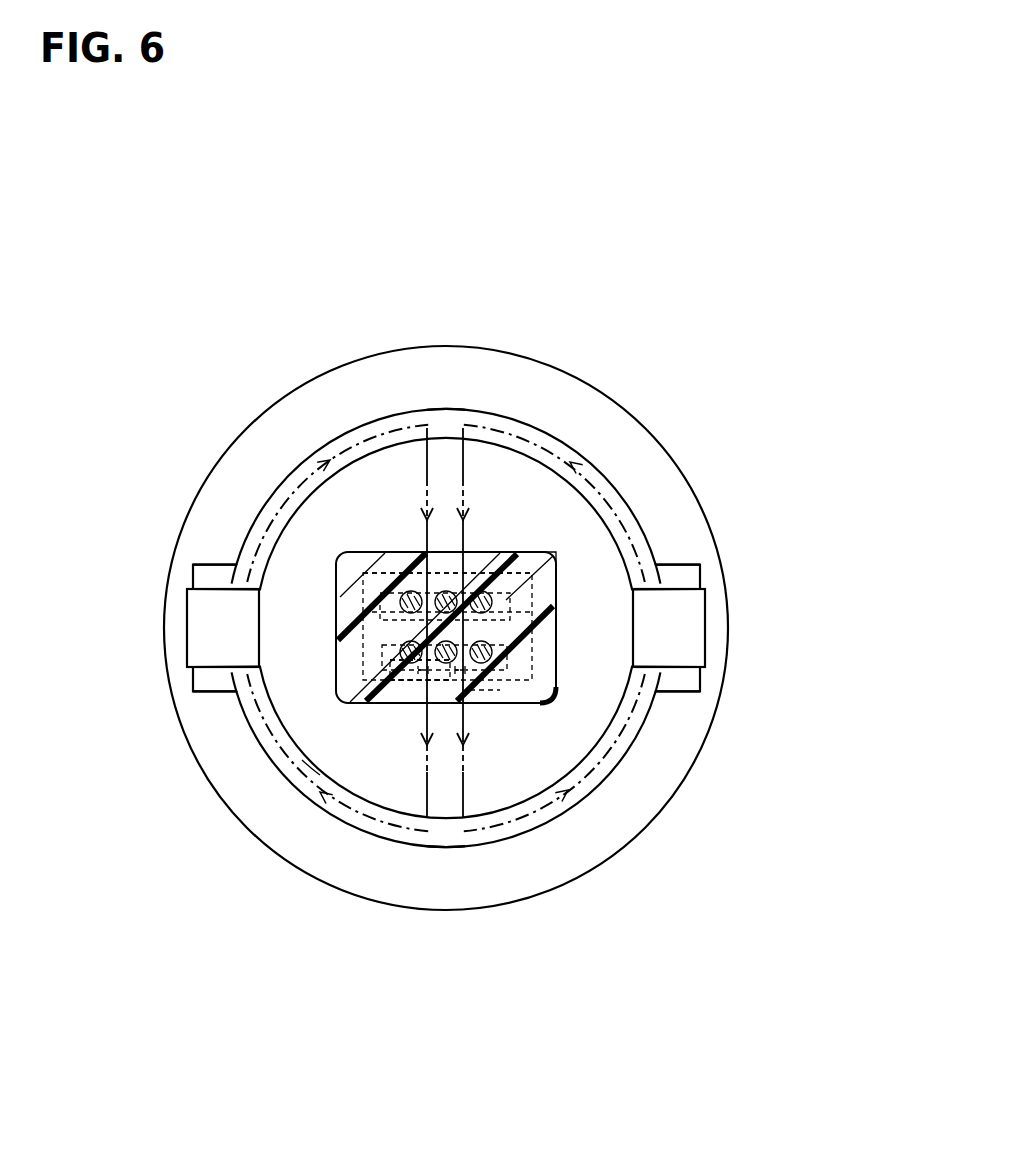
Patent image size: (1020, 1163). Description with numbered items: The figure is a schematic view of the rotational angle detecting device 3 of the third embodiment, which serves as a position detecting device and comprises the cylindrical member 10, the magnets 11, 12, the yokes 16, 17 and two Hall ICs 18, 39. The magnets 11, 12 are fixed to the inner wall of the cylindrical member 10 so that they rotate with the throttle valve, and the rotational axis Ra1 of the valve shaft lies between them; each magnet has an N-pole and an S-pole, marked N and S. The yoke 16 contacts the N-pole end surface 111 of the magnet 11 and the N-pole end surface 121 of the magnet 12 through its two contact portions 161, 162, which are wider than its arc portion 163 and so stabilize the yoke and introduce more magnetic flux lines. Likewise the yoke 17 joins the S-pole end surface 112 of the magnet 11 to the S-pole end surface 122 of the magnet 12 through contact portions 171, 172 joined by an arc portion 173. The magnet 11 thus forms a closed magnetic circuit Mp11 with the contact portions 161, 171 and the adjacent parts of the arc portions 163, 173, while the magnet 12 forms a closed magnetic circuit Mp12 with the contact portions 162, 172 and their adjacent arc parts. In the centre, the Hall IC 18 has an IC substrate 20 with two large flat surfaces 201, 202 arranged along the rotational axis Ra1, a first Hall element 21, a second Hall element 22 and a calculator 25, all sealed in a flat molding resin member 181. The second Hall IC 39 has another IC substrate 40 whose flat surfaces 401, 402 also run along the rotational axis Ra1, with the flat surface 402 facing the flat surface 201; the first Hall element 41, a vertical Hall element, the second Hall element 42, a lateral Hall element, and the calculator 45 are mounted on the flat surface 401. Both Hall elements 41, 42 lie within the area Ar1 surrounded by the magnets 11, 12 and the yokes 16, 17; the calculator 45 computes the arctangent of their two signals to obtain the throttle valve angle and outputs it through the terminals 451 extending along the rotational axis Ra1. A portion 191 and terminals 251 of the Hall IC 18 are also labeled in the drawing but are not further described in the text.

The rotational angle detecting device 3 is at (165, 360).
The cylindrical member 10 is at (598, 437).
The magnet 11 is at (203, 620).
The end surface 111 is at (215, 590).
The end surface 112 is at (212, 667).
The magnet 12 is at (688, 646).
The end surface 121 is at (680, 588).
The end surface 122 is at (683, 668).
The yoke 16 is at (310, 448).
The contact portion 161 is at (223, 583).
The contact portion 162 is at (667, 580).
The arc portion 163 is at (445, 425).
The yoke 17 is at (308, 807).
The contact portion 171 is at (233, 692).
The contact portion 172 is at (672, 692).
The arc portion 173 is at (443, 830).
The Hall IC 18 is at (360, 593).
The molding resin member 181 is at (560, 567).
The gap 191 is at (305, 762).
The IC substrate 20 is at (530, 589).
The flat surface 201 is at (535, 612).
The flat surface 202 is at (524, 575).
The first Hall element 21 is at (377, 613).
The second Hall element 22 is at (447, 555).
The calculator 25 is at (540, 636).
The first leads 251 is at (407, 592).
The Hall IC 39 is at (535, 690).
The IC substrate 40 is at (390, 700).
The flat surface 401 is at (408, 665).
The flat surface 402 is at (385, 660).
The first Hall element 41 is at (440, 665).
The second Hall element 42 is at (458, 665).
The calculator 45 is at (540, 665).
The terminals 451 is at (400, 660).
The area Ar1 is at (412, 480).
The rotational axis Ra1 is at (485, 700).
The closed magnetic circuit Mp11 is at (390, 845).
The closed magnetic circuit Mp12 is at (570, 808).